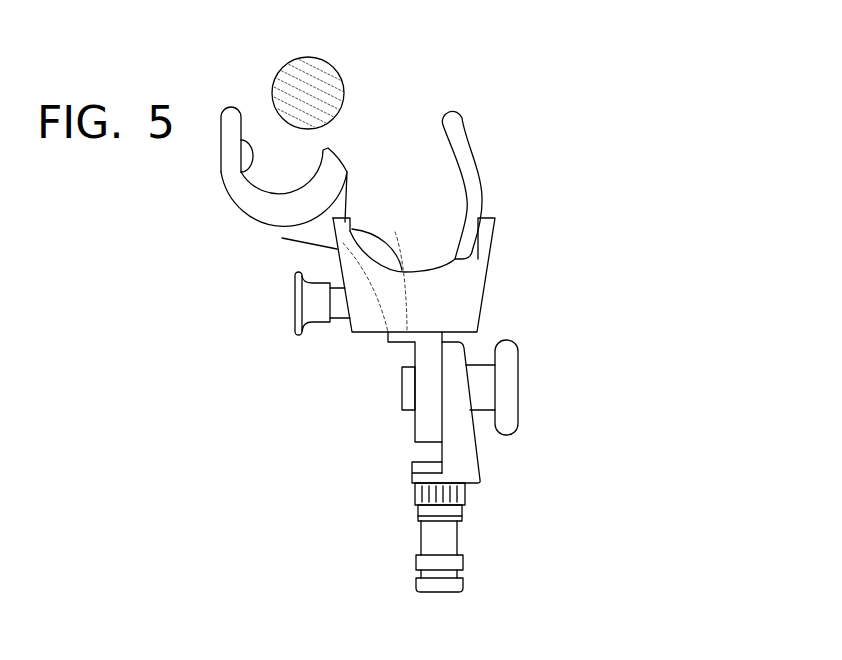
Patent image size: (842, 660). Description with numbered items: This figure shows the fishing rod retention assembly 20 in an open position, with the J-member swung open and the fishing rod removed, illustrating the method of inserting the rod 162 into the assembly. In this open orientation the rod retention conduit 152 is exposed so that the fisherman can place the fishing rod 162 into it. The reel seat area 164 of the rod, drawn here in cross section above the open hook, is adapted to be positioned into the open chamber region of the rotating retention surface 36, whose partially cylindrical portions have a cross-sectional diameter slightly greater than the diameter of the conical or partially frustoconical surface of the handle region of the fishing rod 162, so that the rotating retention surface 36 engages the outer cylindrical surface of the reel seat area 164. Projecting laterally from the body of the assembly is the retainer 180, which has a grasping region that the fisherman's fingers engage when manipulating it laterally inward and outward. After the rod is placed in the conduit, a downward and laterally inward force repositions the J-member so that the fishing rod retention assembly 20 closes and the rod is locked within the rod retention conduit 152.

The fishing rod retention assembly 20 is at (518, 173).
The rotating retention surface 36 is at (241, 171).
The rod retention conduit 152 is at (300, 193).
The fishing rod 162 is at (323, 73).
The reel seat area 164 is at (327, 97).
The retainer 180 is at (310, 301).